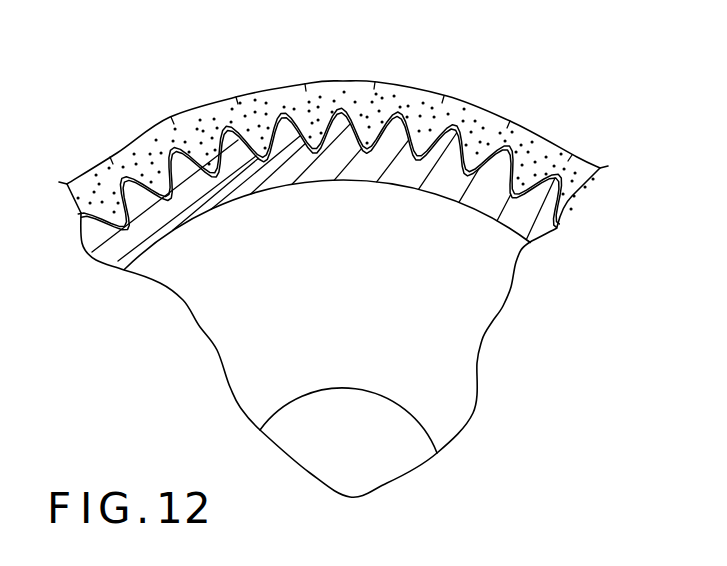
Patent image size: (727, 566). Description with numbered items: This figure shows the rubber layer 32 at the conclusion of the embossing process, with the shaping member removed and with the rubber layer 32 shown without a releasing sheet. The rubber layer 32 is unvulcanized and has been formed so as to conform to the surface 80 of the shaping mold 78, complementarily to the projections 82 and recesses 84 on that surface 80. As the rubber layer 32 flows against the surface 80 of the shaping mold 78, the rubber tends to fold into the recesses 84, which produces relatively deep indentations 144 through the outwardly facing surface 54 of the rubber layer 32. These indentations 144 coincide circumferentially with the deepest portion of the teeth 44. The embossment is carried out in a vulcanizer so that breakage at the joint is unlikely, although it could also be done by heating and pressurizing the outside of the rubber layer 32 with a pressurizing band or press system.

The rubber layer 32 is at (560, 147).
The teeth 44 is at (373, 125).
The outwardly facing surface 54 is at (140, 135).
The shaping mold 78 is at (418, 293).
The surface 80 is at (422, 140).
The projections 82 is at (220, 128).
The recesses 84 is at (264, 115).
The indentations 144 is at (173, 125).